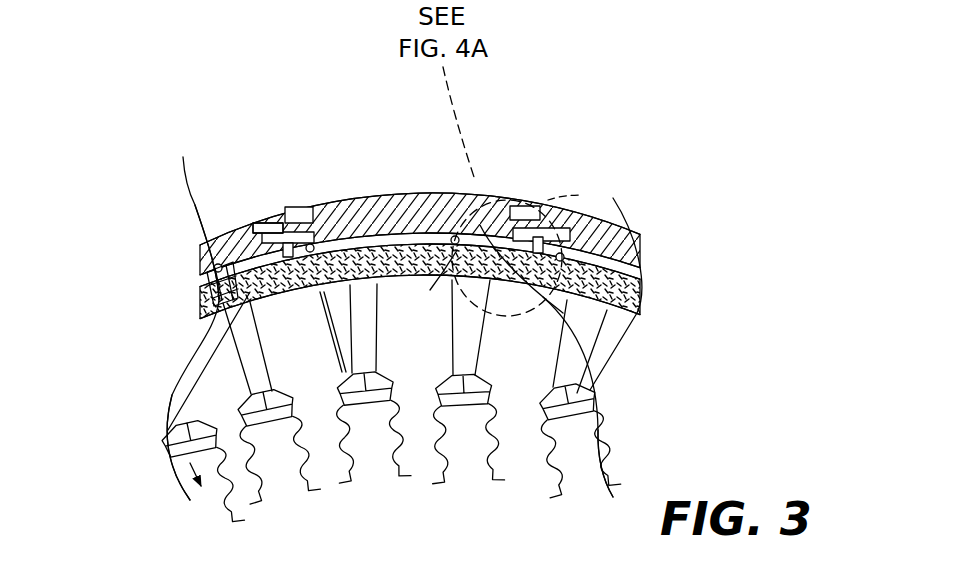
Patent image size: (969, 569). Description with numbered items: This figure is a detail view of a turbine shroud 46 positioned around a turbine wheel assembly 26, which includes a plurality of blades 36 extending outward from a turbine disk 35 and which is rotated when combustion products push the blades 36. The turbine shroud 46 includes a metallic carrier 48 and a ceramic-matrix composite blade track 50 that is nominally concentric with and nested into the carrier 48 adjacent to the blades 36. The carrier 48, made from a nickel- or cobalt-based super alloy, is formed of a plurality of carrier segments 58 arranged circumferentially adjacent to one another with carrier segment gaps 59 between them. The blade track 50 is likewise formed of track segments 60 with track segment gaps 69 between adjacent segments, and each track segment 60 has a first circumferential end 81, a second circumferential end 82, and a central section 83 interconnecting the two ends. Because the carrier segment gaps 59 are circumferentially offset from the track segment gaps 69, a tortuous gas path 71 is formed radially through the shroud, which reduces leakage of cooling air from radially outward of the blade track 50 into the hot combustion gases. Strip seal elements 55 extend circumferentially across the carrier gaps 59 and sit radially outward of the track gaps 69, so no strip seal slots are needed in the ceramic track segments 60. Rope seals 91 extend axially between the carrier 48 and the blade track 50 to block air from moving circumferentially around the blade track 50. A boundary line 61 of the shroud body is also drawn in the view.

The turbine wheel assembly 26 is at (204, 520).
The turbine disk 35 is at (203, 452).
The blades 36 is at (220, 400).
The turbine shroud 46 is at (199, 251).
The carrier 48 is at (199, 238).
The blade track 50 is at (209, 294).
The strip seal elements 55 is at (268, 221).
The carrier segments 58 is at (420, 194).
The carrier segment gaps 59 is at (568, 143).
The track segments 60 is at (246, 267).
The cylinder outline 61 is at (476, 214).
The track segment gaps 69 is at (229, 248).
The tortuous gas path 71 is at (583, 195).
The first circumferential end 81 is at (357, 290).
The second circumferential end 82 is at (345, 236).
The central section 83 is at (222, 322).
The rope seals 91 is at (310, 228).